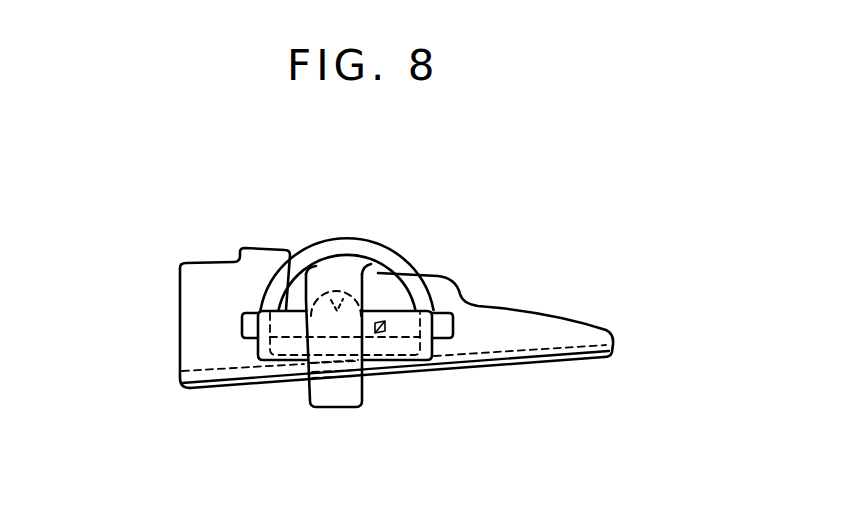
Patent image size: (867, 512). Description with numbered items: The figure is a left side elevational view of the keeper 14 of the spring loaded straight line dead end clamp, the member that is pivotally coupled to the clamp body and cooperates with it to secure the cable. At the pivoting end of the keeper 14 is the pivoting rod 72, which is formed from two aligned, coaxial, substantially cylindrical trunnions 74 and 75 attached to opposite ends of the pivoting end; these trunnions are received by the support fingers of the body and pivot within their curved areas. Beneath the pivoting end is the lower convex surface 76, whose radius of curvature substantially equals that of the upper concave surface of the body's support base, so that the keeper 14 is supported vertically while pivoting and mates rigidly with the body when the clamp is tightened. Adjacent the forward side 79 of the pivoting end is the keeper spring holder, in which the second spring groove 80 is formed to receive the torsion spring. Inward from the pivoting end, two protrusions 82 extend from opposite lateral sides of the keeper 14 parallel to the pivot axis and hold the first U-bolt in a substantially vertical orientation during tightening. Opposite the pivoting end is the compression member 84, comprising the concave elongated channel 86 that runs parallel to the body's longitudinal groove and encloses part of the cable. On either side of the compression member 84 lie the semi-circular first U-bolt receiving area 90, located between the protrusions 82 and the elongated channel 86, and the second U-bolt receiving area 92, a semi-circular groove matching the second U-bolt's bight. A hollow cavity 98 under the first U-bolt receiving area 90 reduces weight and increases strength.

The keeper 14 is at (614, 282).
The pivoting rod 72 is at (447, 348).
The trunnion 74 is at (260, 346).
The trunnion 75 is at (394, 359).
The lower convex surface 76 is at (338, 409).
The forward side 79 is at (372, 296).
The second spring groove 80 is at (380, 314).
The protrusions 82 is at (242, 325).
The compression member 84 is at (618, 335).
The elongated channel 86 is at (553, 362).
The first U-bolt receiving area 90 is at (277, 310).
The second U-bolt receiving area 92 is at (400, 236).
The hollow cavity 98 is at (335, 285).